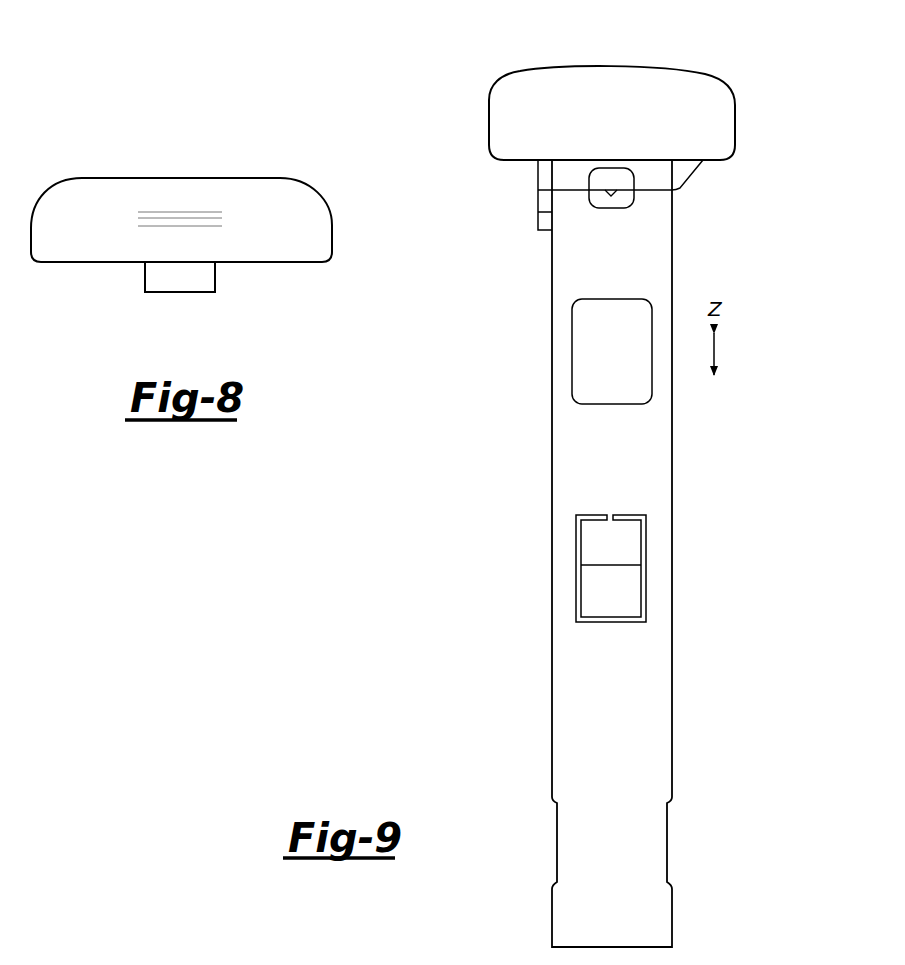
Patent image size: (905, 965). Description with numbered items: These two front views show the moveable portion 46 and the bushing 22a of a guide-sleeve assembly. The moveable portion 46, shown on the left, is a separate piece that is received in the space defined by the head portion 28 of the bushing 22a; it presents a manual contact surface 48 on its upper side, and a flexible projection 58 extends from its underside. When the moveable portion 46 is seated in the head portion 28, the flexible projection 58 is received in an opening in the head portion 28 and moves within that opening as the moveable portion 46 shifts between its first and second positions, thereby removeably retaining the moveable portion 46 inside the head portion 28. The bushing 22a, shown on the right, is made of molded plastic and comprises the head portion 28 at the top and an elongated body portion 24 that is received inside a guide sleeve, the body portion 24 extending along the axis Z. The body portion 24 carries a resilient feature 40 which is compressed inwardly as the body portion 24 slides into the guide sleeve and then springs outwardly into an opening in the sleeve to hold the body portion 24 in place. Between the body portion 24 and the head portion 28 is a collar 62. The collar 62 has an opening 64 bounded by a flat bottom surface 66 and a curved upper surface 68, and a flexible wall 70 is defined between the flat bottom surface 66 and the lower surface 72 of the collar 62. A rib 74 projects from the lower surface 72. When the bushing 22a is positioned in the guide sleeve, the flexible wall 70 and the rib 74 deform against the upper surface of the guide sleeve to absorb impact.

In FIG. 9, the bushing 22a is at (650, 480).
In FIG. 9, the body portion 24 is at (672, 448).
In FIG. 9, the head portion 28 is at (700, 76).
In FIG. 9, the resilient feature 40 is at (623, 593).
In FIG. 8, the moveable portion 46 is at (269, 161).
In FIG. 8, the manual contact surface 48 is at (315, 190).
In FIG. 8, the flexible projection 58 is at (217, 275).
In FIG. 9, the collar 62 is at (570, 172).
In FIG. 9, the opening 64 is at (597, 168).
In FIG. 9, the flat bottom surface 66 is at (630, 168).
In FIG. 9, the curved upper surface 68 is at (611, 190).
In FIG. 9, the flexible wall 70 is at (627, 190).
In FIG. 9, the lower surface 72 is at (648, 193).
In FIG. 9, the rib 74 is at (609, 197).